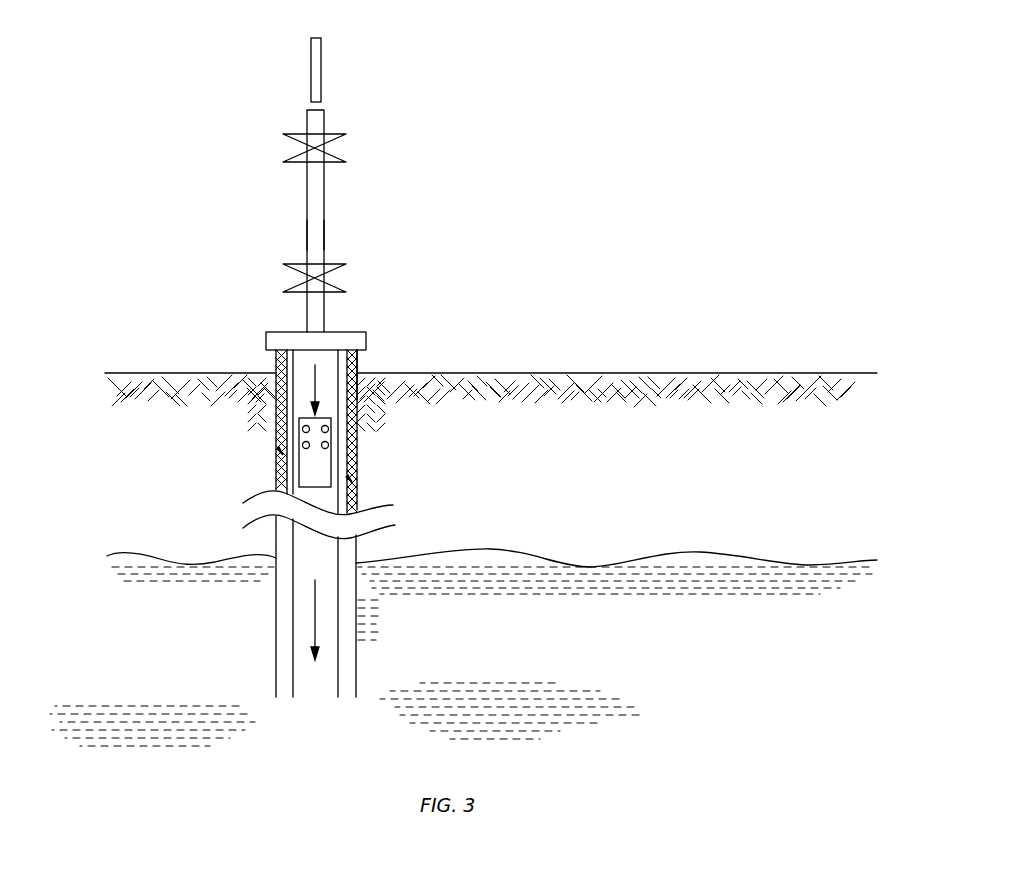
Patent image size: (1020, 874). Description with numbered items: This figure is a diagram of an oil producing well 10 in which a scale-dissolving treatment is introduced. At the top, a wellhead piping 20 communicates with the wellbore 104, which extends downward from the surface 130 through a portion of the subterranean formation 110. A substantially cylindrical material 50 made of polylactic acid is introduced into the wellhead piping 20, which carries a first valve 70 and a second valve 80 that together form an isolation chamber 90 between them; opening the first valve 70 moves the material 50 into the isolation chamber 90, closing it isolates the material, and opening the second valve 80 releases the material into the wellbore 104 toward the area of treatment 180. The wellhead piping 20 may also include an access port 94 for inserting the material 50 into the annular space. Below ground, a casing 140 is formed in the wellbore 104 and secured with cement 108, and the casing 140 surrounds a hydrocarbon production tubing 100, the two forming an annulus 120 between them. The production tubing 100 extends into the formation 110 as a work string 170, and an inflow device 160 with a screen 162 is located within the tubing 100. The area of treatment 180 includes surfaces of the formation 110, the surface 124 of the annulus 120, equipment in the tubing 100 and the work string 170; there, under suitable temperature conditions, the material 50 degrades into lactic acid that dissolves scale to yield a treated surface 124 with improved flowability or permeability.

The oil producing well 10 is at (194, 131).
The wellhead piping 20 is at (325, 210).
The substantially cylindrical material 50 is at (311, 68).
The first valve 70 is at (340, 163).
The second valve 80 is at (337, 264).
The isolation chamber 90 is at (316, 233).
The access port 94 is at (285, 350).
The hydrocarbon production tubing 100 is at (342, 466).
The wellbore 104 is at (380, 373).
The cement 108 is at (358, 362).
The subterranean formation 110 is at (495, 620).
The annulus 120 is at (277, 428).
The surface 124 is at (283, 360).
The surface 130 is at (755, 373).
The casing 140 is at (279, 475).
The inflow device 160 is at (333, 451).
The screen 162 is at (330, 430).
The work string 170 is at (294, 637).
The area of treatment 180 is at (282, 455).